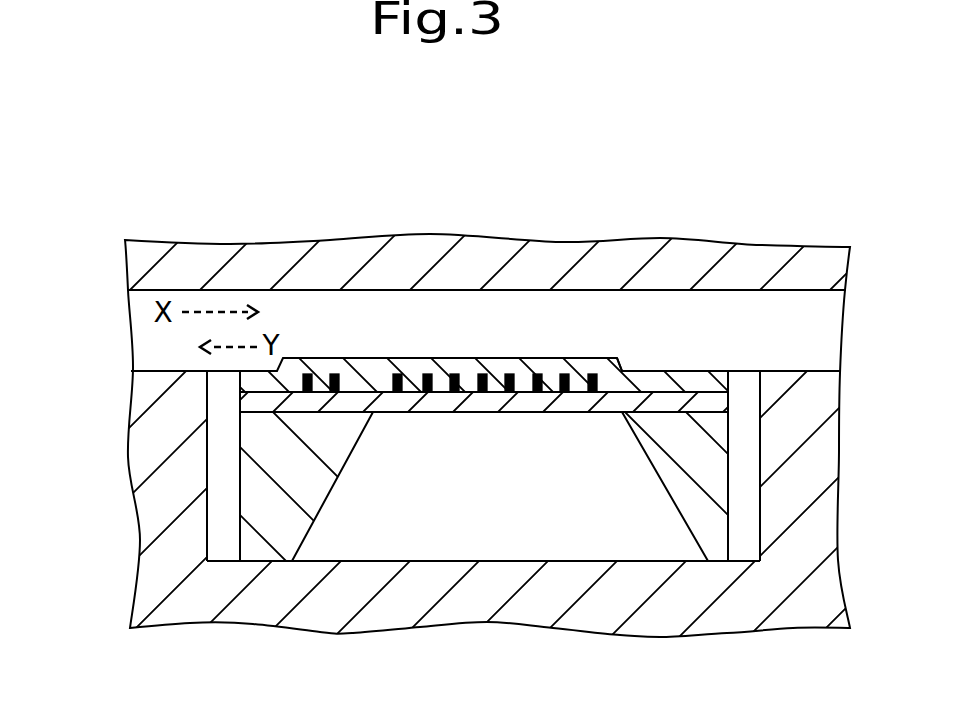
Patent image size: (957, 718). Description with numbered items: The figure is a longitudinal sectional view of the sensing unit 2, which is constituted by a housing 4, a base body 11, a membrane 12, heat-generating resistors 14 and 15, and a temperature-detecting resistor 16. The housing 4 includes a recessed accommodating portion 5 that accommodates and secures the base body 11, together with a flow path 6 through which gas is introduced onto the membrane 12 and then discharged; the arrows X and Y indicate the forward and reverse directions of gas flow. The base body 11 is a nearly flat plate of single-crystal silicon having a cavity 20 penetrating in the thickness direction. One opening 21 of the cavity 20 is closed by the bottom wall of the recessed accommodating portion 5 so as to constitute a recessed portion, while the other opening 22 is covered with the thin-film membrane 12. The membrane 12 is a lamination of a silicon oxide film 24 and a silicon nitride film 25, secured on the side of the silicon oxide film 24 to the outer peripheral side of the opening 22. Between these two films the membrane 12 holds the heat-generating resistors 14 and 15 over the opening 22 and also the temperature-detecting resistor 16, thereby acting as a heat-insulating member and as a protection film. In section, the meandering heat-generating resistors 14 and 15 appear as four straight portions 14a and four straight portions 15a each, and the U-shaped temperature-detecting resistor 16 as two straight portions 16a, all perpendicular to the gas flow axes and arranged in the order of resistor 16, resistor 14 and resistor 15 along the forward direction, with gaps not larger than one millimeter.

The sensing unit 2 is at (837, 245).
The housing 4 is at (830, 457).
The recessed accommodating portion 5 is at (761, 520).
The flow path 6 is at (142, 290).
The base body 11 is at (263, 550).
The membrane 12 is at (372, 325).
The heat-generating resistor 14 is at (380, 250).
The straight portion 14a is at (397, 373).
The heat-generating resistor 15 is at (586, 250).
The straight portion 15a is at (509, 373).
The temperature-detecting resistor 16 is at (237, 250).
The straight portion 16a is at (307, 373).
The cavity 20 is at (475, 528).
The opening 21 is at (597, 562).
The opening 22 is at (633, 388).
The silicon oxide film 24 is at (240, 404).
The silicon nitride film 25 is at (255, 372).